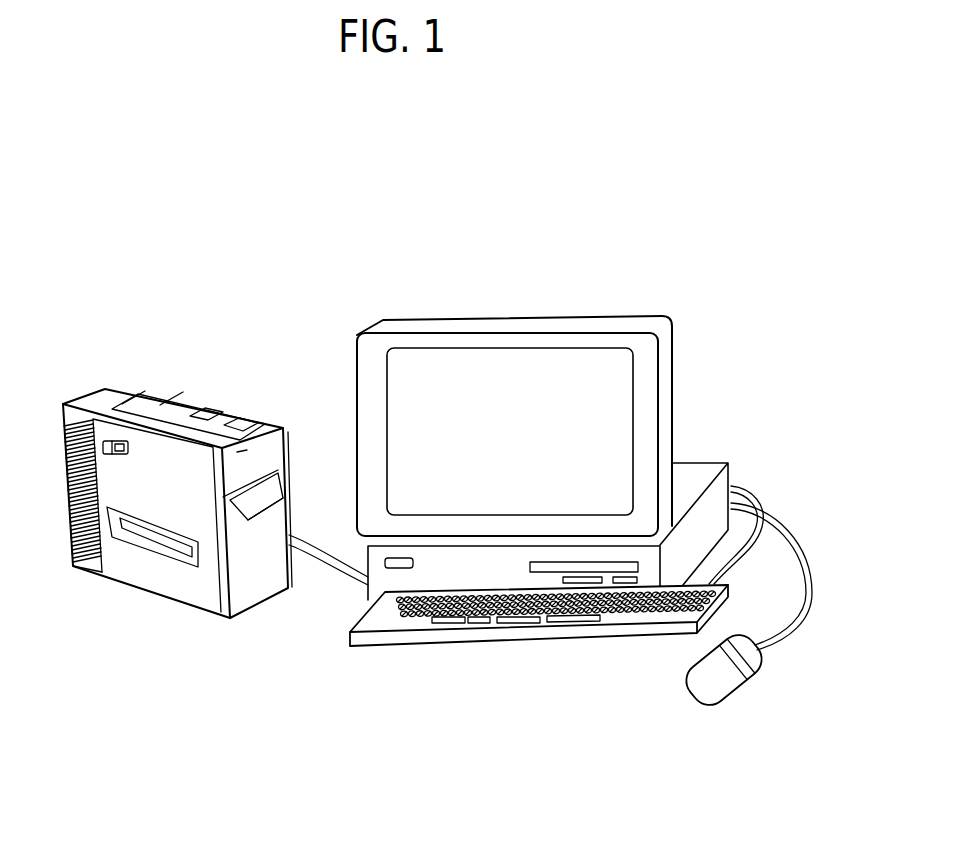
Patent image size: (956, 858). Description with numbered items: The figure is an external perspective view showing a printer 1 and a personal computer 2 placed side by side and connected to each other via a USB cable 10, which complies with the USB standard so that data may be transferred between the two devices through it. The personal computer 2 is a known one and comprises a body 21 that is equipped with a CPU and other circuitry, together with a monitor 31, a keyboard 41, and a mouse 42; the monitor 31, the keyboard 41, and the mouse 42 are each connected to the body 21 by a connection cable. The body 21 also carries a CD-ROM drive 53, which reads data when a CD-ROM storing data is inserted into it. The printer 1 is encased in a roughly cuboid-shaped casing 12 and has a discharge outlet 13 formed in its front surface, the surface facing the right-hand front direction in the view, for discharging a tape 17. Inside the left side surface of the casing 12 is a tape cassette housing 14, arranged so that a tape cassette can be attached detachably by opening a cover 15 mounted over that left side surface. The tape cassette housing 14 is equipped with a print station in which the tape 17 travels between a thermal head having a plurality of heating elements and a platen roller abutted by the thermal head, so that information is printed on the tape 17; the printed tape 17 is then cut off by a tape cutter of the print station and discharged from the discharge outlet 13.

The printer 1 is at (184, 480).
The personal computer 2 is at (589, 452).
The USB cable 10 is at (337, 570).
The casing 12 is at (90, 398).
The discharge outlet 13 is at (262, 472).
The tape cassette housing 14 is at (139, 571).
The cover 15 is at (170, 580).
The tape 17 is at (258, 508).
The body 21 is at (598, 500).
The monitor 31 is at (611, 316).
The keyboard 41 is at (513, 634).
The mouse 42 is at (717, 678).
The CD-ROM drive 53 is at (623, 548).